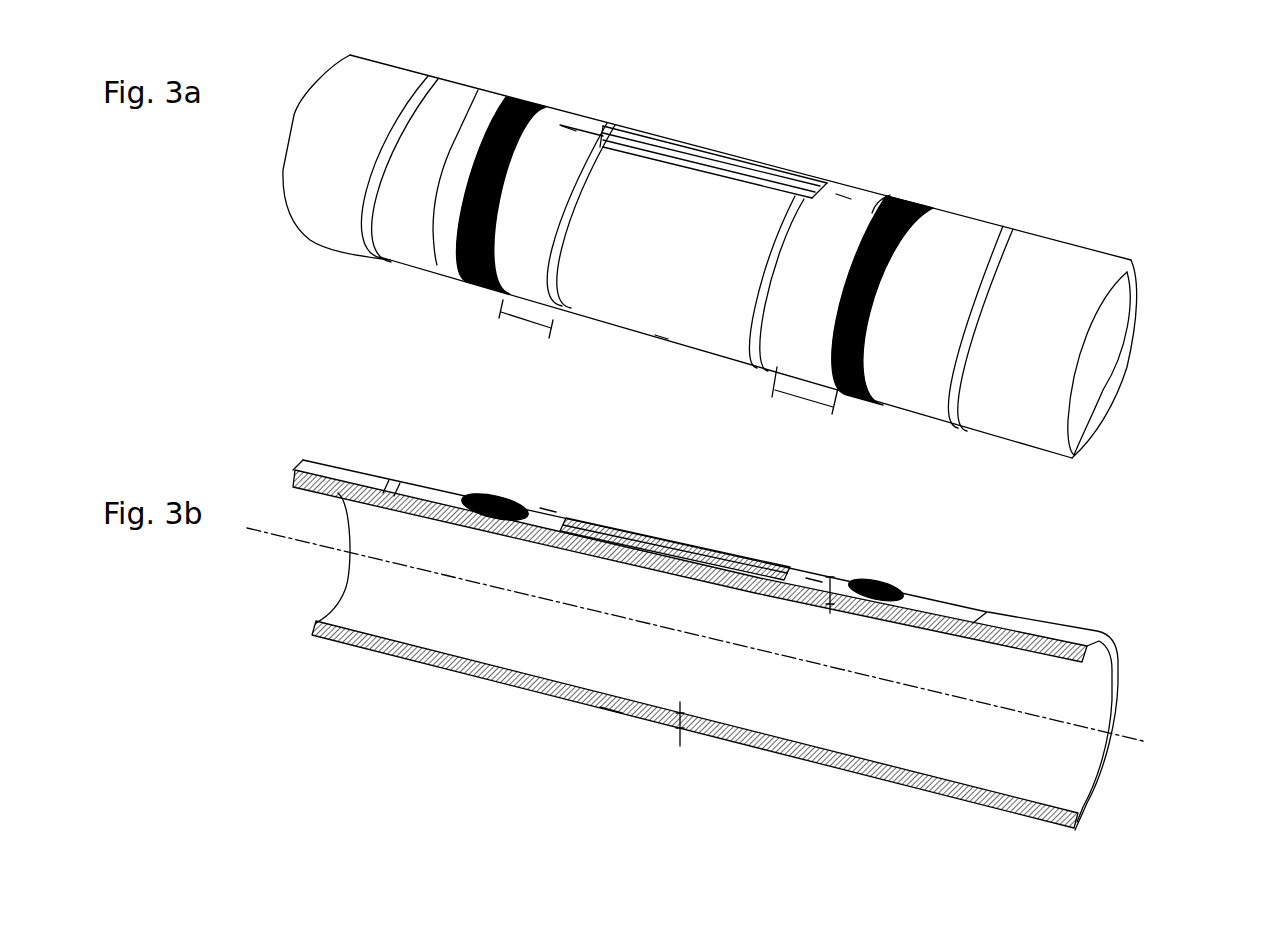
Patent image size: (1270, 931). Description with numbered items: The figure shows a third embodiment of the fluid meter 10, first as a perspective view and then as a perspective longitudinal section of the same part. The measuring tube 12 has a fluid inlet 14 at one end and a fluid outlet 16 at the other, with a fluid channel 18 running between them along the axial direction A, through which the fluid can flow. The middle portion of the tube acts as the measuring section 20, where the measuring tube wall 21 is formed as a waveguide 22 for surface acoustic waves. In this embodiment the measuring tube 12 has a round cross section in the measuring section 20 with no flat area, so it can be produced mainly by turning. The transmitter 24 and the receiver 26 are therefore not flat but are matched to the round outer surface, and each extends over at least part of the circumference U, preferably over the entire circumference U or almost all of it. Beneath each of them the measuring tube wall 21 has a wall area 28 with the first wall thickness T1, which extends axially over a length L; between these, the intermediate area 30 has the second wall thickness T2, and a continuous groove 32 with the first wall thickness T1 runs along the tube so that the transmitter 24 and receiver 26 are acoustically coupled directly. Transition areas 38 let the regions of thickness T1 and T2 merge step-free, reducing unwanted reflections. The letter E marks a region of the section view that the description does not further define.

In FIG. 3A, the fluid meter 10 is at (1221, 120).
In FIG. 3B, the fluid meter 10 is at (1104, 567).
In FIG. 3A, the measuring tube 12 is at (1023, 218).
In FIG. 3B, the measuring tube 12 is at (967, 590).
In FIG. 3A, the fluid inlet 14 is at (283, 178).
In FIG. 3A, the fluid outlet 16 is at (1100, 380).
In FIG. 3B, the fluid channel 18 is at (680, 662).
In FIG. 3A, the measuring section 20 is at (618, 353).
In FIG. 3B, the measuring section 20 is at (554, 718).
In FIG. 3A, the measuring tube wall 21 is at (480, 93).
In FIG. 3B, the measuring tube wall 21 is at (453, 487).
In FIG. 3A, the waveguide 22 is at (870, 210).
In FIG. 3A, the transmitter 24 is at (525, 99).
In FIG. 3B, the transmitter 24 is at (502, 493).
In FIG. 3A, the receiver 26 is at (902, 197).
In FIG. 3B, the receiver 26 is at (893, 586).
In FIG. 3A, the wall area 28 is at (568, 128).
In FIG. 3B, the wall area 28 is at (543, 508).
In FIG. 3A, the intermediate area 30 is at (665, 313).
In FIG. 3B, the intermediate area 30 is at (611, 713).
In FIG. 3A, the continuous groove 32 is at (708, 147).
In FIG. 3B, the continuous groove 32 is at (683, 537).
In FIG. 3A, the transition area 38 is at (390, 275).
In FIG. 3B, the transition area 38 is at (367, 650).
In FIG. 3A, the circumference U is at (435, 262).
In FIG. 3A, the length L is at (541, 326).
In FIG. 3B, the axial direction A is at (274, 536).
In FIG. 3B, the first wall thickness T1 is at (834, 579).
In FIG. 3B, the second wall thickness T2 is at (694, 734).
In FIG. 3B, the end region E is at (892, 714).